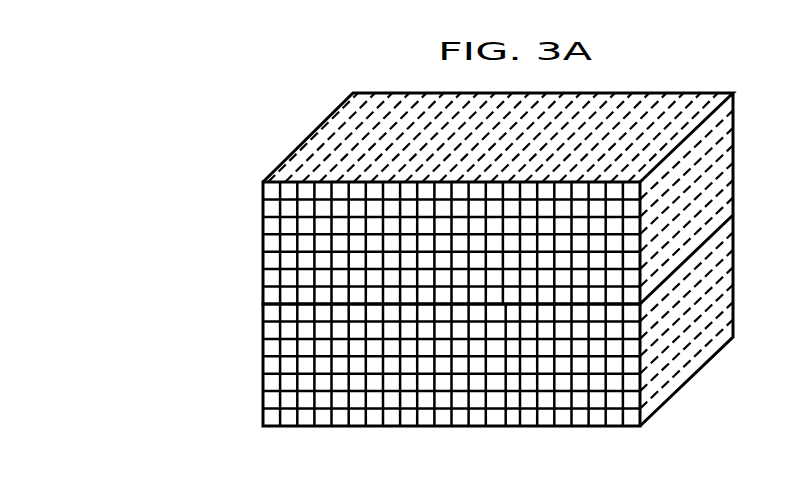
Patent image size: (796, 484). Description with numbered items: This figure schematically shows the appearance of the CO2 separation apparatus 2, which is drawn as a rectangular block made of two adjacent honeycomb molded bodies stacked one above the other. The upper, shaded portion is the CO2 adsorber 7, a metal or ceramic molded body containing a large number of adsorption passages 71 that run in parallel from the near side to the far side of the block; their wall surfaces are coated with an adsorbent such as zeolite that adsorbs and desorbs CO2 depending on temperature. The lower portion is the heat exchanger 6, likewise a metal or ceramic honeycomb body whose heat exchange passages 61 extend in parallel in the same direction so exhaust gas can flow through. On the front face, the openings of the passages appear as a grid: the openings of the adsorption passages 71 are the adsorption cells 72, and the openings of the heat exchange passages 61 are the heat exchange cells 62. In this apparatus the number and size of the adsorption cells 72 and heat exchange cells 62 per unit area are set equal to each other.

The CO2 separation apparatus 2 is at (290, 115).
The CO2 adsorber 7 is at (261, 251).
The adsorption passage 71 is at (655, 120).
The adsorption cell 72 is at (320, 262).
The heat exchanger 6 is at (261, 380).
The heat exchange passage 61 is at (686, 366).
The heat exchange cell 62 is at (323, 385).